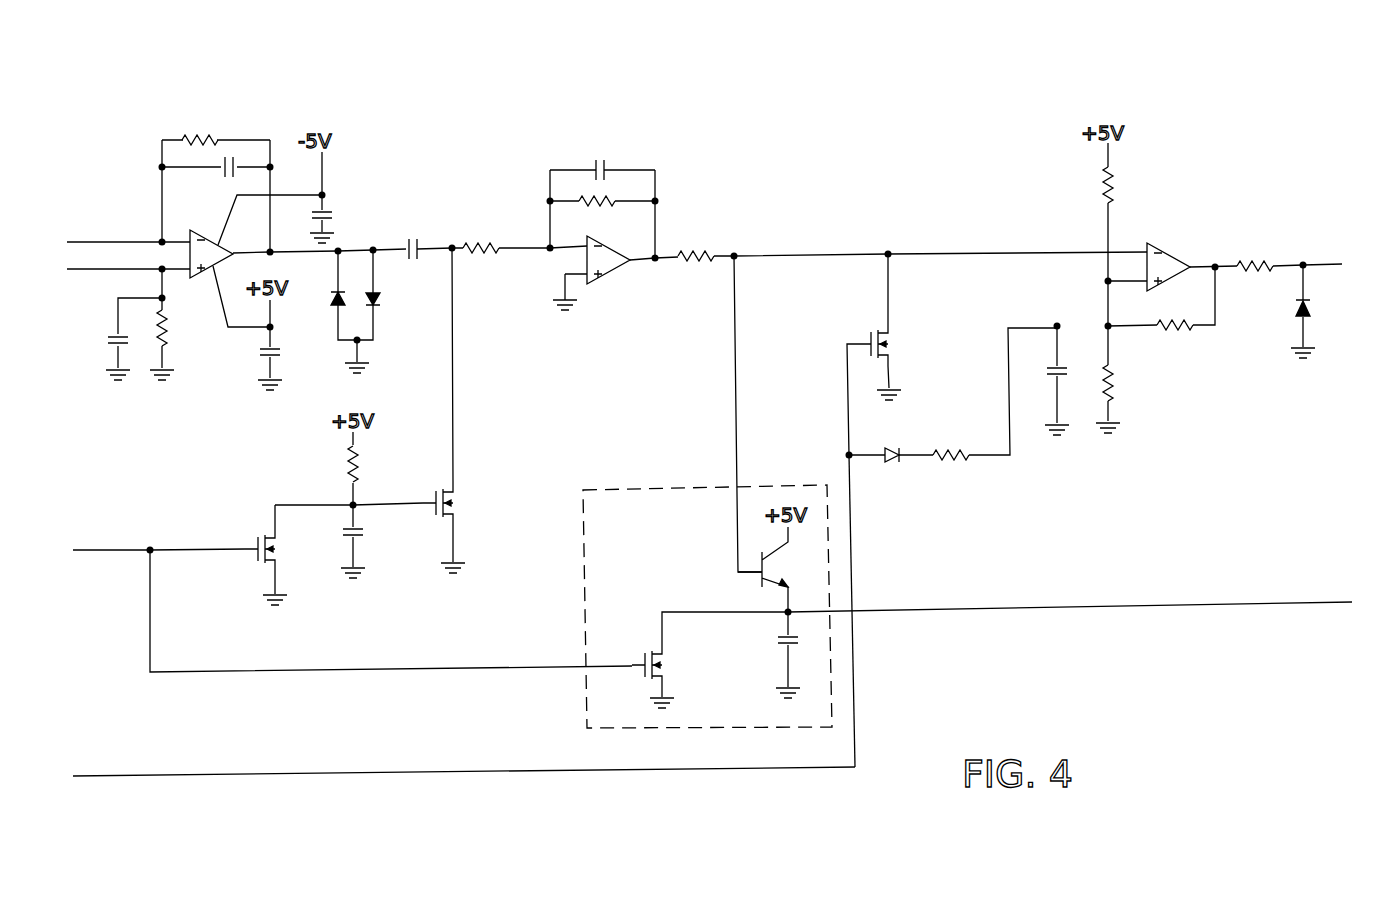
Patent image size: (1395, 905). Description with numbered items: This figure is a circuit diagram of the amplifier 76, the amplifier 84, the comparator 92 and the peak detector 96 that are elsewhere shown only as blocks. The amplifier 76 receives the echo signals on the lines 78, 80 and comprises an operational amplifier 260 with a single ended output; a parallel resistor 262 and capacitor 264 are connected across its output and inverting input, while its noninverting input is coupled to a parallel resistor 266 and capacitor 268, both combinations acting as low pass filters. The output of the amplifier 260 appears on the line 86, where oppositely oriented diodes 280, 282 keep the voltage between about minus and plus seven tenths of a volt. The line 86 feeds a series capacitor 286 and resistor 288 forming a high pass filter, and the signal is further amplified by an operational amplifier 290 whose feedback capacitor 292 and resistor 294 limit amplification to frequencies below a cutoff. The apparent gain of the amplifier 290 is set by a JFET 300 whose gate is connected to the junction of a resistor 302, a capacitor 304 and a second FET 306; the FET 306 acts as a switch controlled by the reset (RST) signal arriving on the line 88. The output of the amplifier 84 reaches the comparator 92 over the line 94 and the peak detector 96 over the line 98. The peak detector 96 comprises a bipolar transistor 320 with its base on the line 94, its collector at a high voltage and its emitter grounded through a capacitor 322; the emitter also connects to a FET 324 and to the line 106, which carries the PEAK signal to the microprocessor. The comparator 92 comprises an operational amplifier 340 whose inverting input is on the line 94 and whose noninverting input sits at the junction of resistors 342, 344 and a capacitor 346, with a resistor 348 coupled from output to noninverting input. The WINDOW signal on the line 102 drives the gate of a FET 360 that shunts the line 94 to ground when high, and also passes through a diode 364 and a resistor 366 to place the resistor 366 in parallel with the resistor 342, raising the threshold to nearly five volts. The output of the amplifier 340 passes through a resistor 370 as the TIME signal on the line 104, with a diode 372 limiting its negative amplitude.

The amplifier 76 is at (118, 139).
The line 78 is at (88, 240).
The line 80 is at (90, 272).
The amplifier 84 is at (460, 158).
The line 86 is at (359, 249).
The line 88 is at (97, 553).
The comparator 92 is at (960, 168).
The line 94 is at (838, 253).
The peak detector 96 is at (657, 487).
The line 98 is at (738, 375).
The line 102 is at (487, 776).
The line 104 is at (1318, 263).
The line 106 is at (1263, 602).
The operational amplifier 260 is at (199, 226).
The resistor 262 is at (222, 117).
The capacitor 264 is at (238, 157).
The resistor 266 is at (170, 326).
The capacitor 268 is at (112, 341).
The diode 280 is at (330, 302).
The diode 282 is at (397, 284).
The capacitor 286 is at (414, 243).
The resistor 288 is at (492, 246).
The operational amplifier 290 is at (605, 272).
The capacitor 292 is at (607, 162).
The resistor 294 is at (607, 202).
The JFET 300 is at (428, 497).
The resistor 302 is at (345, 463).
The capacitor 304 is at (362, 540).
The FET 306 is at (255, 540).
The bipolar transistor 320 is at (750, 580).
The capacitor 322 is at (780, 640).
The FET 324 is at (640, 659).
The operational amplifier 340 is at (1160, 245).
The resistor 342 is at (1100, 191).
The resistor 344 is at (1115, 387).
The capacitor 346 is at (1060, 370).
The resistor 348 is at (1187, 330).
The FET 360 is at (866, 338).
The diode 364 is at (893, 465).
The resistor 366 is at (958, 470).
The resistor 370 is at (1258, 262).
The diode 372 is at (1312, 312).